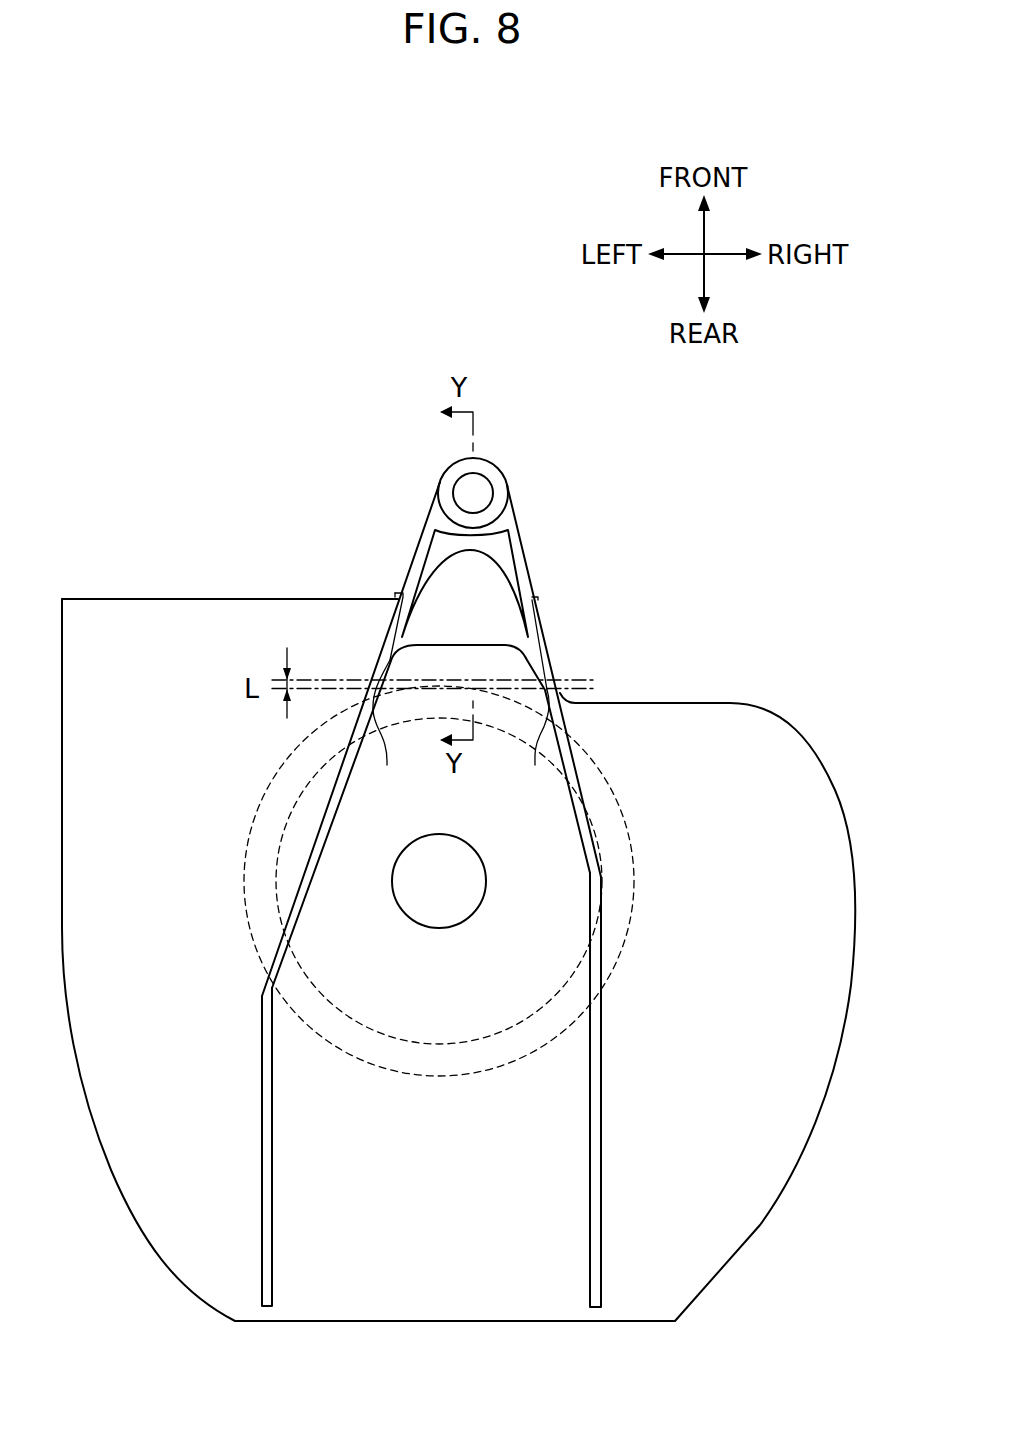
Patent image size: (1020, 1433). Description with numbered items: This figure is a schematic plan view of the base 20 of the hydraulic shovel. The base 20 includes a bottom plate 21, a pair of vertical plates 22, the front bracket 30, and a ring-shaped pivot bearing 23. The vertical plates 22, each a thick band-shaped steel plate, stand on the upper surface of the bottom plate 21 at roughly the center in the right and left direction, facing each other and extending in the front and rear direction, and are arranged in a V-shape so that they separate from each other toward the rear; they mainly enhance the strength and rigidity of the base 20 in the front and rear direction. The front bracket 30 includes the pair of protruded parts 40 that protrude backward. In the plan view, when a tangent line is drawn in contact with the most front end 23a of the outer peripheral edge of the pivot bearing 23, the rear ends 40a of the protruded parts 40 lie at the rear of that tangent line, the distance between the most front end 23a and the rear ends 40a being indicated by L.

The base 20 is at (682, 560).
The bottom plate 21 is at (172, 623).
The vertical plates 22 is at (272, 1233).
The pivot bearing 23 is at (617, 882).
The most front end of outer peripheral edge of pivot bearing 23a is at (440, 681).
The front bracket 30 is at (528, 541).
The protruded parts 40 is at (388, 655).
The rear end of protruded part 40a is at (460, 730).